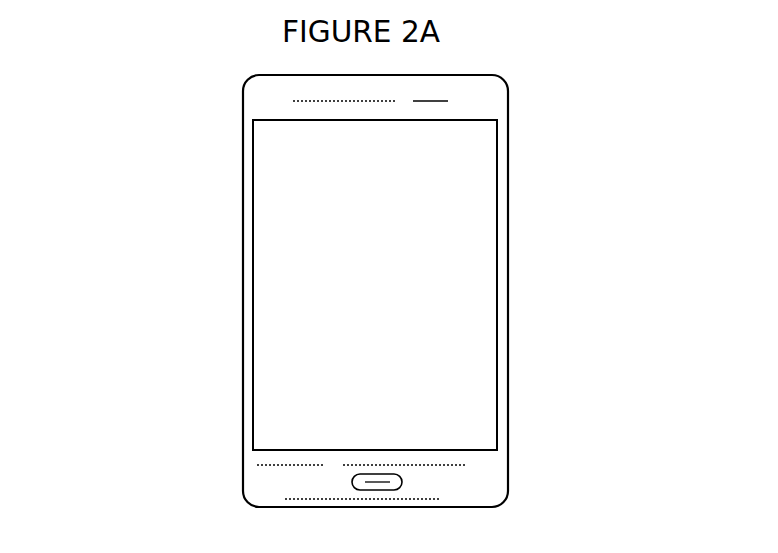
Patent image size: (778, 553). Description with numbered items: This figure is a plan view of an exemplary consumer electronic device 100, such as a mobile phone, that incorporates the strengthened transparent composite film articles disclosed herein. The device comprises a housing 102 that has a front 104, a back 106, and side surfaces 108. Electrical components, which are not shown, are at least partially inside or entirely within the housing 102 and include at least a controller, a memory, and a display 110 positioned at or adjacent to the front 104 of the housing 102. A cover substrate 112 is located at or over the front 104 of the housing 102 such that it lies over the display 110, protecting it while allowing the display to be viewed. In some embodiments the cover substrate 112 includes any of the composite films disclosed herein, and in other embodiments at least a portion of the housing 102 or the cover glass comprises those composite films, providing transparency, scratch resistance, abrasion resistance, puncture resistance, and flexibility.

The consumer electronic device 100 is at (533, 125).
The housing 102 is at (263, 100).
The front surface 104 is at (482, 483).
The back surface 106 is at (282, 240).
The side surfaces 108 is at (508, 328).
The display 110 is at (445, 245).
The cover substrate 112 is at (290, 350).